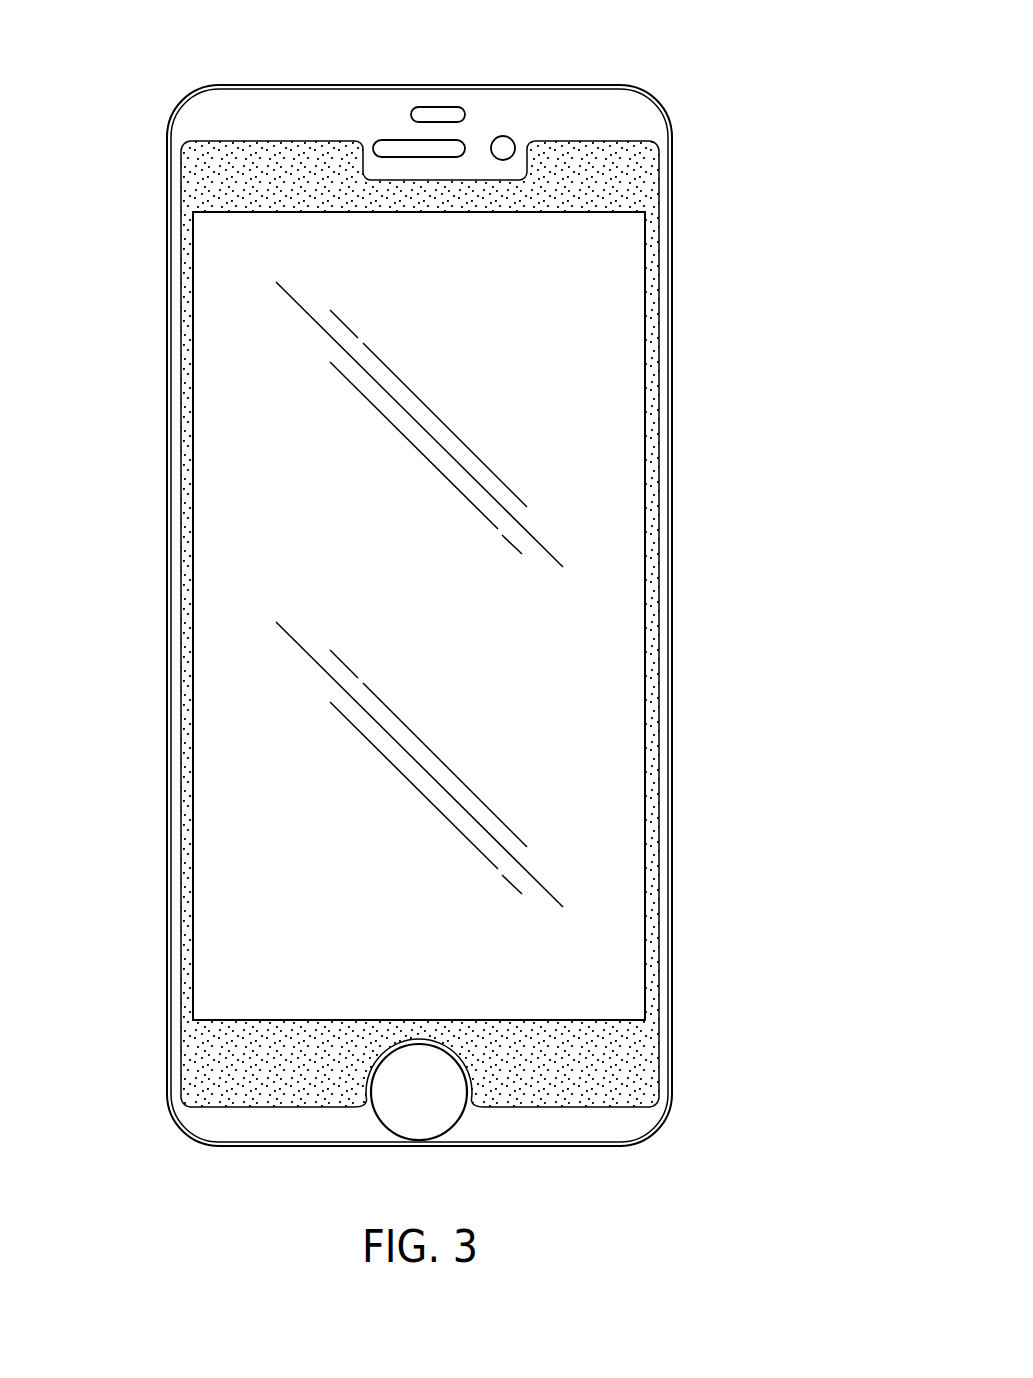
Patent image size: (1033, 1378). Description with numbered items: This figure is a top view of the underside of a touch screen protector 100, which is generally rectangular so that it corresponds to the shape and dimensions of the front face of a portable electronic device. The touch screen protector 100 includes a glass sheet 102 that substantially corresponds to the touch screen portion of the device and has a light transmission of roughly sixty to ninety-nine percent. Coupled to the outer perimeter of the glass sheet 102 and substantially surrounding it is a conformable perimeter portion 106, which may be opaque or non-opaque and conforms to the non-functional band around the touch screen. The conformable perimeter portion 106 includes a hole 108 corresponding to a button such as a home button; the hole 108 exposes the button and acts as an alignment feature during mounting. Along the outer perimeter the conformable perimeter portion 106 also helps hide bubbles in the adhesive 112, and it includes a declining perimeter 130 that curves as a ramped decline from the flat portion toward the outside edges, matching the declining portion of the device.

The touch screen protector 100 is at (417, 613).
The glass sheet 102 is at (600, 433).
The conformable perimeter portion 106 is at (634, 119).
The hole 108 is at (430, 1113).
The adhesive 112 is at (458, 195).
The declining perimeter 130 is at (371, 86).